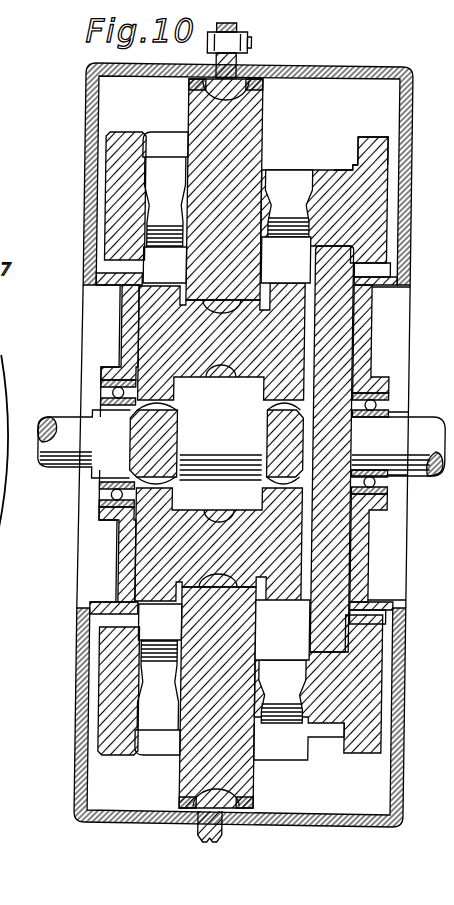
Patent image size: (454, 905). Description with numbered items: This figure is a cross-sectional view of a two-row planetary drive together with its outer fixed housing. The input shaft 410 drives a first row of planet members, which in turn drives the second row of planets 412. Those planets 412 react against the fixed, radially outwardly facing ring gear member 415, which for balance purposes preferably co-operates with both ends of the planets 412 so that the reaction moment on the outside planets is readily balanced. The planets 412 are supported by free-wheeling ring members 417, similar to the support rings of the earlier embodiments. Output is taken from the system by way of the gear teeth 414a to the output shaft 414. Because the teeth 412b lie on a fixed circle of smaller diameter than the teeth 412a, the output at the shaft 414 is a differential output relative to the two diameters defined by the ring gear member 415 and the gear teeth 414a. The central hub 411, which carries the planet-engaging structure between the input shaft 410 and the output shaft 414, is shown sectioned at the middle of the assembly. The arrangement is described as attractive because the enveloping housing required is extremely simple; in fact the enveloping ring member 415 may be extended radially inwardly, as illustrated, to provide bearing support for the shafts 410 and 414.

The input shaft 410 is at (64, 418).
The hub 411 is at (156, 342).
The planets 412 is at (203, 113).
The teeth 412a is at (369, 137).
The teeth 412b is at (331, 165).
The output shaft 414 is at (428, 420).
The gear teeth 414a is at (313, 244).
The ring gear member 415 is at (86, 133).
The free-wheeling ring members 417 is at (186, 84).